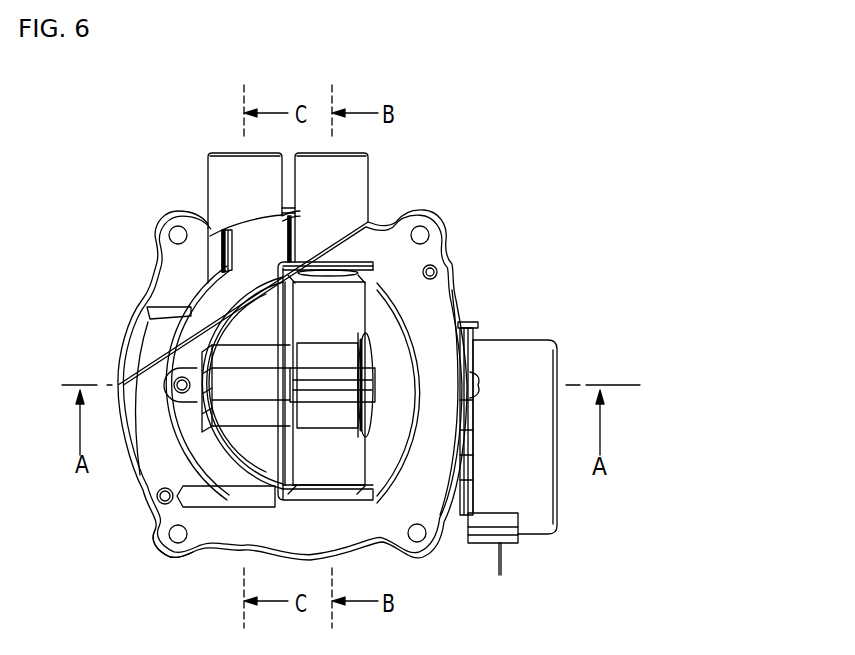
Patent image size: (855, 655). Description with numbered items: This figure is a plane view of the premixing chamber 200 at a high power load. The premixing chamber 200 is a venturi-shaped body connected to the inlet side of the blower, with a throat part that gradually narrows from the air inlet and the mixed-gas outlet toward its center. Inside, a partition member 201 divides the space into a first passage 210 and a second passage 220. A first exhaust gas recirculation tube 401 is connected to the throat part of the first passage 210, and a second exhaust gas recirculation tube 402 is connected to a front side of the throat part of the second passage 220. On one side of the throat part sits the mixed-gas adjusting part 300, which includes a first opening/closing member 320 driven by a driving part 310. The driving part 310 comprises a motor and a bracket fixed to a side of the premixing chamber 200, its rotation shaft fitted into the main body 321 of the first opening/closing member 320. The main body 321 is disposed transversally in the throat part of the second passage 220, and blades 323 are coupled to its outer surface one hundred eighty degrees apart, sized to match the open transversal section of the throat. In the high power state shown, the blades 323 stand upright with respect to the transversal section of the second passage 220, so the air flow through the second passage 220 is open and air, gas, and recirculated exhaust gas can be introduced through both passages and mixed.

The premixing chamber 200 is at (138, 272).
The partition member 201 is at (282, 453).
The first passage 210 is at (244, 437).
The second passage 220 is at (326, 461).
The mixed-gas adjusting part 300 is at (580, 415).
The driving part 310 is at (535, 350).
The first opening/closing member 320 is at (450, 307).
The main body 321 is at (327, 357).
The blades 323 is at (337, 385).
The first exhaust gas recirculation tube 401 is at (217, 168).
The second exhaust gas recirculation tube 402 is at (357, 173).